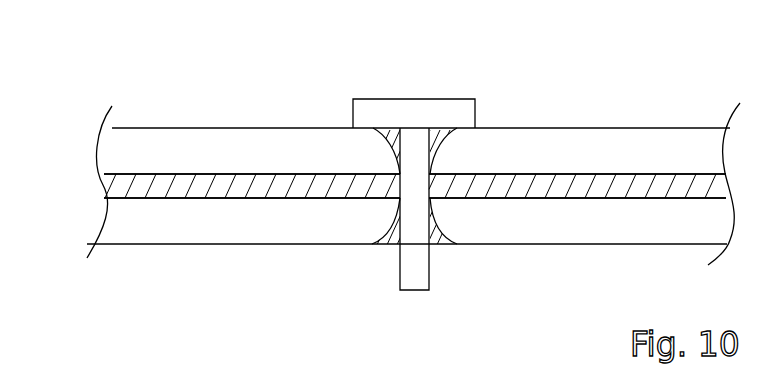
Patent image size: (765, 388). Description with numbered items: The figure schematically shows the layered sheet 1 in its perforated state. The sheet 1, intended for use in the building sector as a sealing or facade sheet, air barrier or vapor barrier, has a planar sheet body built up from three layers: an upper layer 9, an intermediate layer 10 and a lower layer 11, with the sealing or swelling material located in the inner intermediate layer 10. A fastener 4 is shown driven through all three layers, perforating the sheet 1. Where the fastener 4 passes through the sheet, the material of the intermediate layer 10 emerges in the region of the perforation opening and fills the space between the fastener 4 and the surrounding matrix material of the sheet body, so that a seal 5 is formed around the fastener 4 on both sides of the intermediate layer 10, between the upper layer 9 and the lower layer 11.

The sheet 1 is at (612, 93).
The fastener 4 is at (450, 112).
The seal 5 is at (447, 144).
The upper layer 9 is at (178, 163).
The intermediate layer 10 is at (103, 190).
The lower layer 11 is at (178, 225).